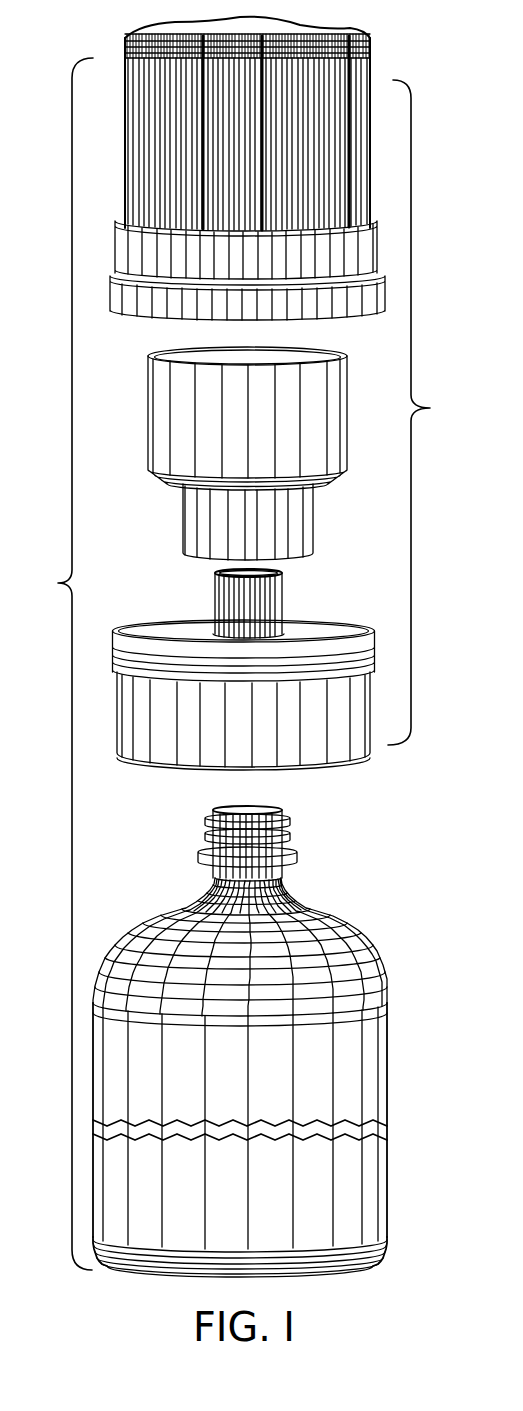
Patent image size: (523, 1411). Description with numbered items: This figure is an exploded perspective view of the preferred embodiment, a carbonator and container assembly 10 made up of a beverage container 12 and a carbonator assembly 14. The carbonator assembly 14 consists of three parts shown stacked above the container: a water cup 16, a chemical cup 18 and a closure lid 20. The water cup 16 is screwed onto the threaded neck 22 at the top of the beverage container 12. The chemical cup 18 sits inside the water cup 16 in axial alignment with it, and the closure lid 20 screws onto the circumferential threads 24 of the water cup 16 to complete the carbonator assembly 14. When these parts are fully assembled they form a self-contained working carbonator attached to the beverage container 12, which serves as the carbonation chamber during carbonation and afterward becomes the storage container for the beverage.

The carbonator and container assembly 10 is at (59, 664).
The beverage container 12 is at (245, 1041).
The carbonator assembly 14 is at (426, 412).
The water cup 16 is at (251, 669).
The chemical cup 18 is at (266, 451).
The closure lid 20 is at (370, 67).
The threaded neck 22 is at (287, 835).
The circumferential threads 24 is at (370, 647).